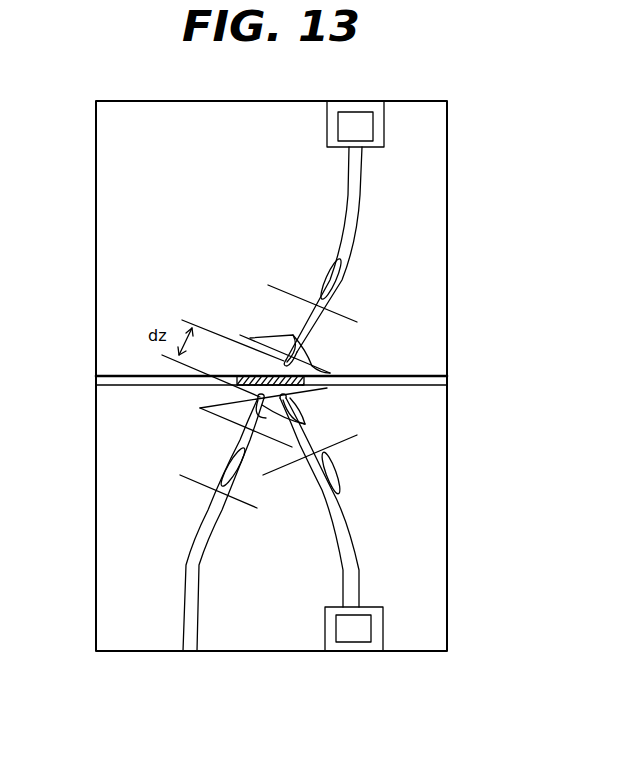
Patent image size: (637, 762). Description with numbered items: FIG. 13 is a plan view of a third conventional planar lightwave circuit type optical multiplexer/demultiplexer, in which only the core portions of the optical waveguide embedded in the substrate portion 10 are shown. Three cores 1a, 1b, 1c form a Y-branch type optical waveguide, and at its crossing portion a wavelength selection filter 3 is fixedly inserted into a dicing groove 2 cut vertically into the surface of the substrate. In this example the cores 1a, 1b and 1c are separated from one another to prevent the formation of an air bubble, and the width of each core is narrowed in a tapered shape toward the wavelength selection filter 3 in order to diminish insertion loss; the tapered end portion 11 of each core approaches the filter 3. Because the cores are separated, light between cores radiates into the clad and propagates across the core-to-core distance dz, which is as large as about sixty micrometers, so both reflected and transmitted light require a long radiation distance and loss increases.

The substrate 10 is at (102, 127).
The core 1a is at (186, 563).
The core 1b is at (352, 207).
The core 1c is at (353, 570).
The dicing groove 2 is at (447, 380).
The wavelength selection filter 3 is at (313, 363).
The stitch bond 11 is at (335, 297).